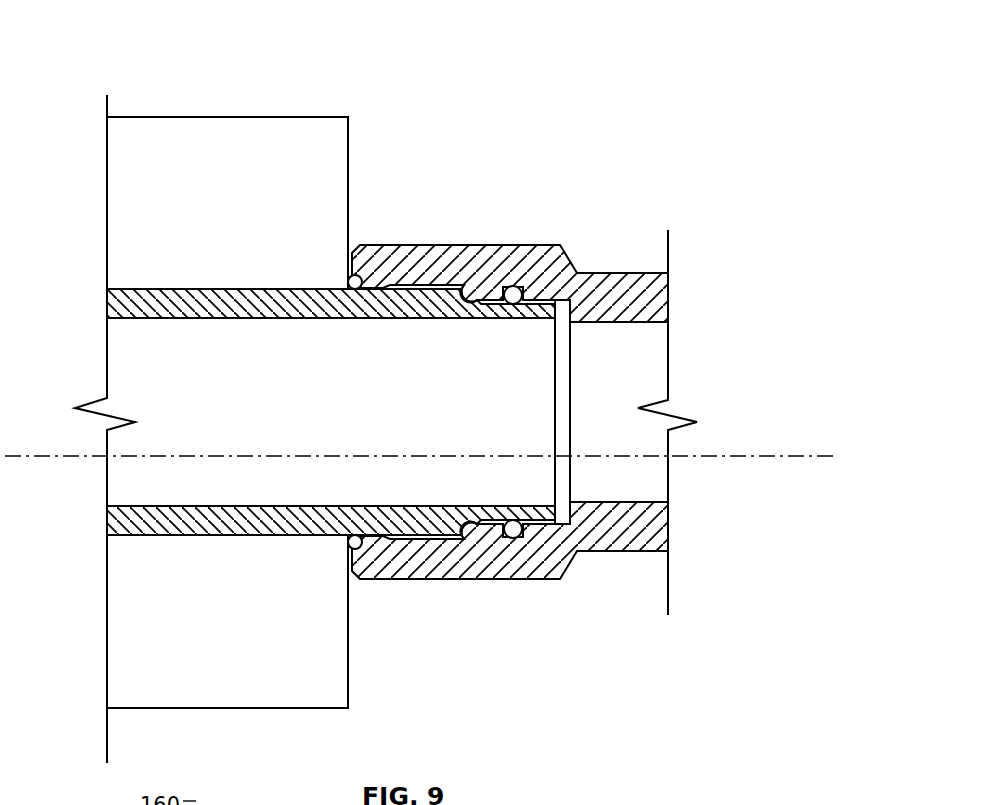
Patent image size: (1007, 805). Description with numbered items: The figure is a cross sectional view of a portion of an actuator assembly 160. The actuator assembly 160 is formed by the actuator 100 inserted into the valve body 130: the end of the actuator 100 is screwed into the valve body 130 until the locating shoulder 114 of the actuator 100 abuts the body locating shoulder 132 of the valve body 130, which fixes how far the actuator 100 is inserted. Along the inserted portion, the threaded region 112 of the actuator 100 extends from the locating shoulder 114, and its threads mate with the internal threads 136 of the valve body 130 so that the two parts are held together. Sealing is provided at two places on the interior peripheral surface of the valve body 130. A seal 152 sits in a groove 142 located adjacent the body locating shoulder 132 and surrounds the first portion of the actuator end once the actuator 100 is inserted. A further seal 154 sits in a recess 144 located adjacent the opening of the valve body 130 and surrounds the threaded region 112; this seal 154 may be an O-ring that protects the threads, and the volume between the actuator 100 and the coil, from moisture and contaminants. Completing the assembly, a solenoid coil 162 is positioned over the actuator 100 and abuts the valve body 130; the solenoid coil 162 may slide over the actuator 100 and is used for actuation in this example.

The actuator 100 is at (291, 320).
The valve body 130 is at (403, 583).
The actuator assembly 160 is at (142, 107).
The solenoid coil 162 is at (158, 120).
The locating shoulder 114 is at (623, 340).
The body locating shoulder 132 is at (478, 299).
The threaded region 112 is at (371, 498).
The internal threads 136 is at (469, 530).
The recess 144 is at (425, 376).
The seal 154 is at (352, 274).
The groove 142 is at (582, 453).
The seal 152 is at (513, 547).